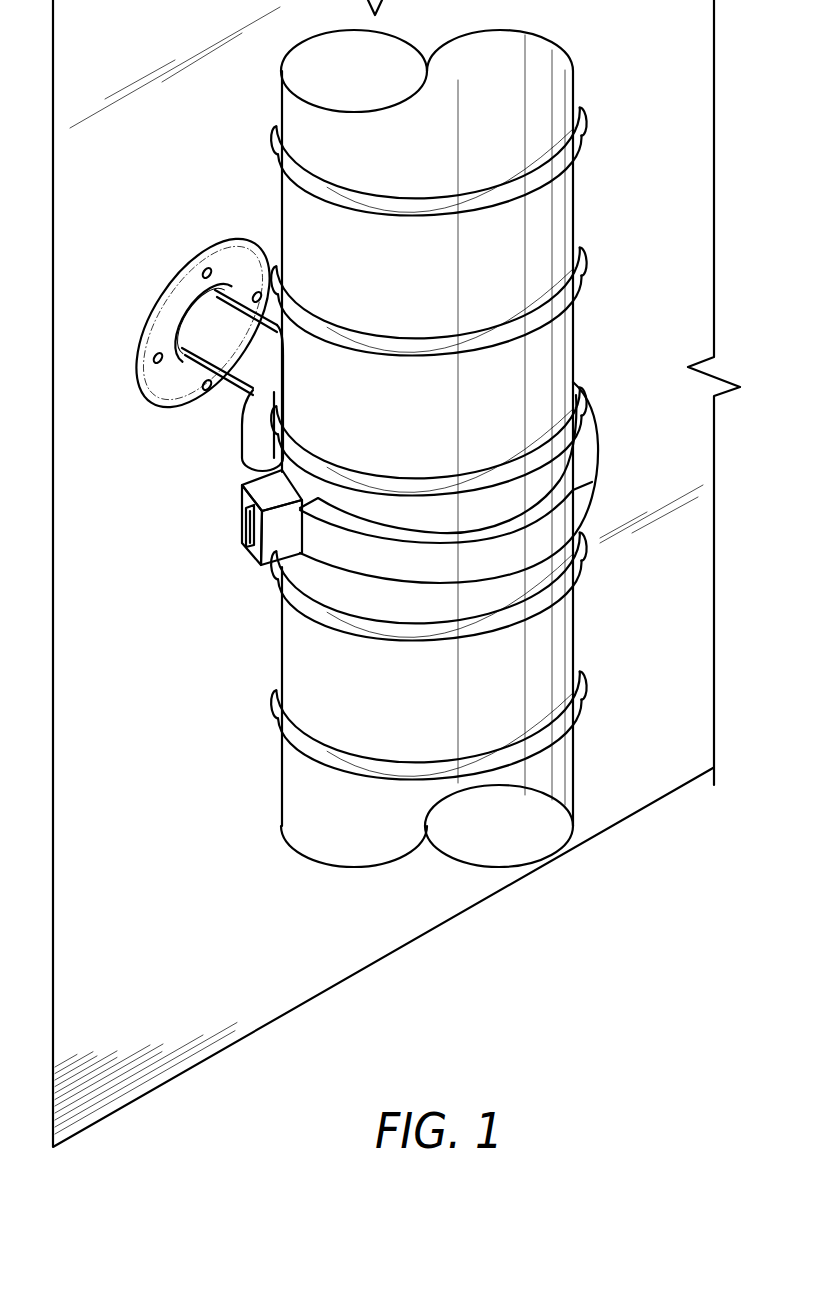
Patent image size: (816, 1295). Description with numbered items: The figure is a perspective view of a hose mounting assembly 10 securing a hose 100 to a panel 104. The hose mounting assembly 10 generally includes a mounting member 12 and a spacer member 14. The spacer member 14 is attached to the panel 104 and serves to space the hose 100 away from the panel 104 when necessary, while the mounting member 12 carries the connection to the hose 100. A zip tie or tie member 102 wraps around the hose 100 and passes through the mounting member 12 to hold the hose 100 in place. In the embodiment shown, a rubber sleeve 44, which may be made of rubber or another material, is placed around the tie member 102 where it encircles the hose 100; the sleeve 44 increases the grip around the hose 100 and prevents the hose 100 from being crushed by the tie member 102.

The hose mounting assembly 10 is at (129, 275).
The mounting member 12 is at (258, 450).
The spacer member 14 is at (232, 357).
The rubber sleeve 44 is at (583, 500).
The hose 100 is at (545, 243).
The tie member 102 is at (272, 543).
The panel 104 is at (172, 172).